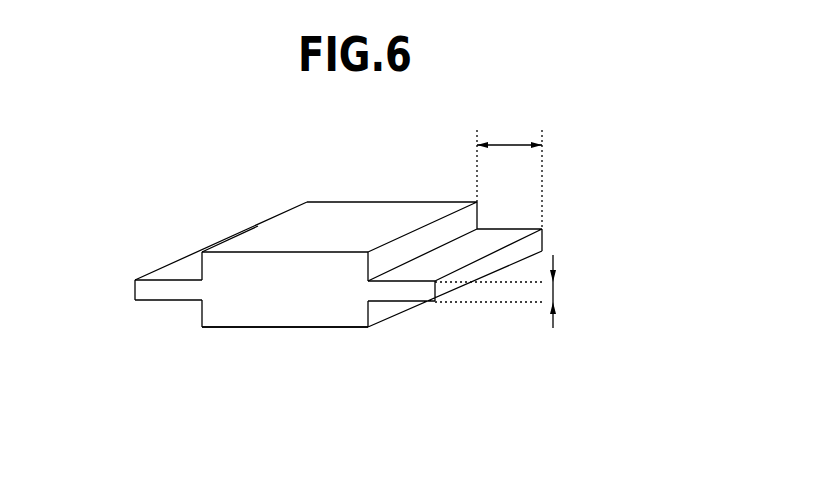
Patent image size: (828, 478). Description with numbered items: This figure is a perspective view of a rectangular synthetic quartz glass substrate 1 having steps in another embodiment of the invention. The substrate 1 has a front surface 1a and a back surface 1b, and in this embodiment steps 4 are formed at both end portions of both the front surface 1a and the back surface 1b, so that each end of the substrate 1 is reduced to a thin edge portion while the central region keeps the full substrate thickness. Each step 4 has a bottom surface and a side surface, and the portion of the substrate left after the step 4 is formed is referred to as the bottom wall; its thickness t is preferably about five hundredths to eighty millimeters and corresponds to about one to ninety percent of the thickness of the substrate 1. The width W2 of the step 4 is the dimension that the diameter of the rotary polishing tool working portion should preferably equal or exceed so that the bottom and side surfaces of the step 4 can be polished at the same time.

The synthetic quartz glass substrate 1 is at (334, 268).
The front surface 1a is at (373, 222).
The back surface 1b is at (285, 328).
The step 4 is at (185, 262).
The width of the step W2 is at (509, 172).
The thickness of the bottom wall t is at (554, 291).